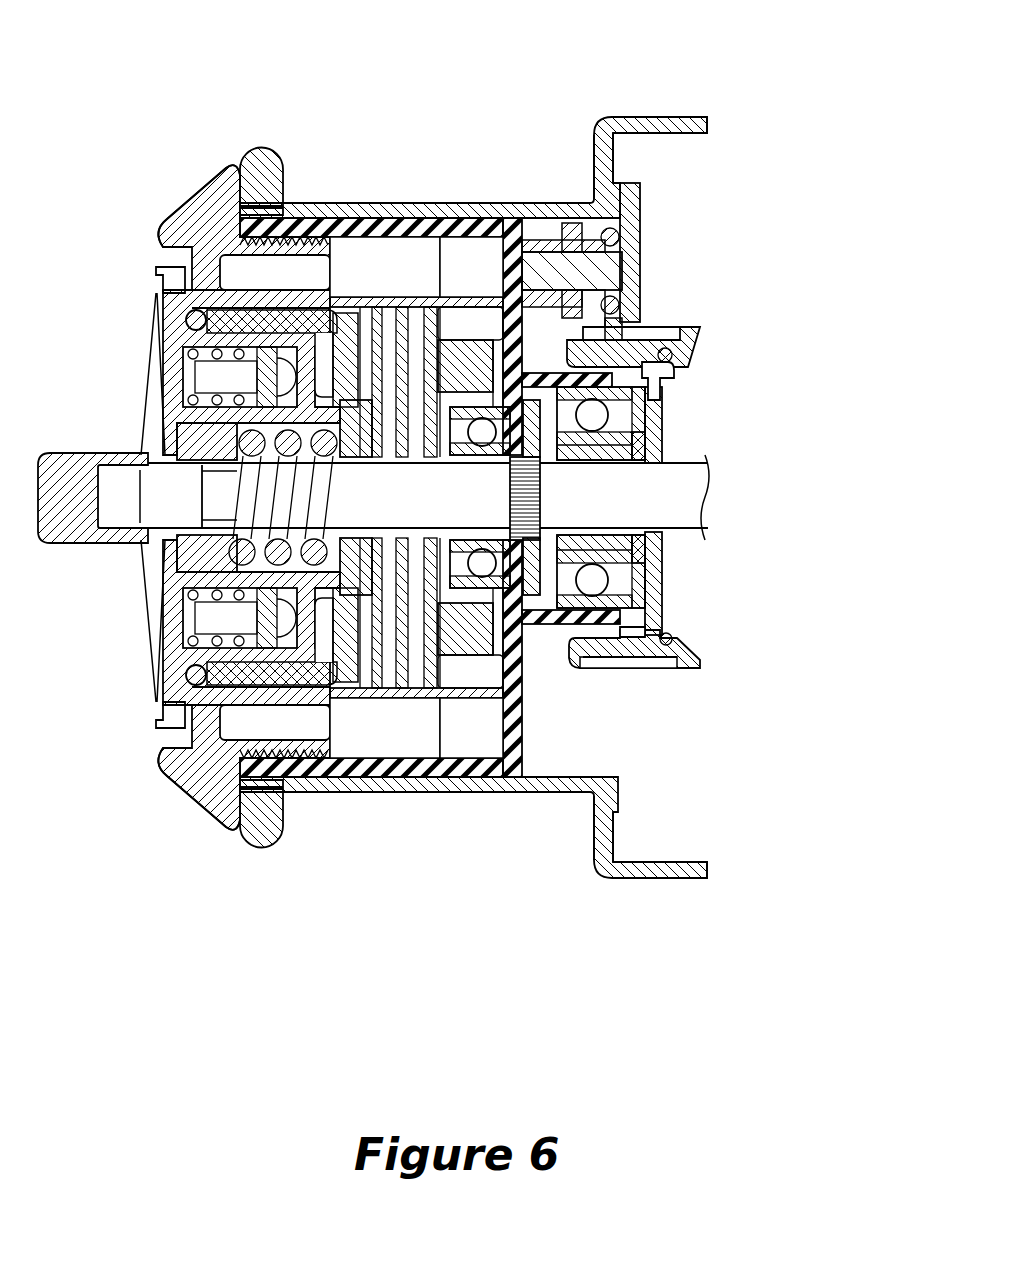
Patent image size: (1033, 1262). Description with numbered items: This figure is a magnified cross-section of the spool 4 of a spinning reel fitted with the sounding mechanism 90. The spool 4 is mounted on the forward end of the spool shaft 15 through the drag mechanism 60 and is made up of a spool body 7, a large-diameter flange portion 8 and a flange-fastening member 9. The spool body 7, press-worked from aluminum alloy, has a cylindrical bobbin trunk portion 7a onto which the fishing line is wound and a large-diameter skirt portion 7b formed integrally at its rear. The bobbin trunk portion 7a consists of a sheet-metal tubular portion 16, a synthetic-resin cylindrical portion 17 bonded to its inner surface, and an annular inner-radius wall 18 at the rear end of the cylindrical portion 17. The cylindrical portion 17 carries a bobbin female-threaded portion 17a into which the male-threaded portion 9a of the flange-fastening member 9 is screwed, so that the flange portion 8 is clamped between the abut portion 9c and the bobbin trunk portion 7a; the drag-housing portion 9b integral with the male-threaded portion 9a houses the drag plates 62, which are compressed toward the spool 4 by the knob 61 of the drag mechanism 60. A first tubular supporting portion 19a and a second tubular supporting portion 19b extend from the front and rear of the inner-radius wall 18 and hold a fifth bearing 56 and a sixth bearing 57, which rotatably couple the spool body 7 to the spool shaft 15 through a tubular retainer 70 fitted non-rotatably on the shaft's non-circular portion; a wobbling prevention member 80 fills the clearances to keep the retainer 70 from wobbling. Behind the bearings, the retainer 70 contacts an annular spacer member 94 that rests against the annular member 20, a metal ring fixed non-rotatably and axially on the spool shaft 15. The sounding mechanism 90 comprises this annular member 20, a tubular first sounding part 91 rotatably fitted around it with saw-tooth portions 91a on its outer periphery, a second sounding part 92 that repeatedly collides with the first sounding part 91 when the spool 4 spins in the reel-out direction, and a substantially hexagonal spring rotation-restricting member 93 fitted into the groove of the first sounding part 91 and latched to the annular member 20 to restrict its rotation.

The spool 4 is at (405, 136).
The spool body 7 is at (443, 200).
The bobbin trunk portion 7a is at (531, 200).
The skirt portion 7b is at (681, 119).
The flange portion 8 is at (262, 150).
The flange-fastening member 9 is at (194, 188).
The male-threaded portion 9a is at (268, 248).
The drag-housing portion 9b is at (300, 306).
The abut portion 9c is at (177, 220).
The spool shaft 15 is at (598, 510).
The tubular portion 16 is at (337, 203).
The cylindrical portion 17 is at (513, 300).
The bobbin female-threaded portion 17a is at (428, 298).
The inner-radius wall 18 is at (512, 265).
The first tubular supporting portion 19a is at (482, 572).
The second tubular supporting portion 19b is at (612, 620).
The annular member 20 is at (668, 412).
The fifth bearing 56 is at (493, 590).
The sixth bearing 57 is at (598, 580).
The drag mechanism 60 is at (314, 690).
The knob 61 is at (165, 678).
The drag plates 62 is at (392, 700).
The retainer 70 is at (538, 598).
The wobbling prevention member 80 is at (440, 600).
The sounding mechanism 90 is at (762, 277).
The first sounding part 91 is at (714, 328).
The saw-tooth portions 91a is at (648, 330).
The second sounding part 92 is at (648, 263).
The rotation-restricting member 93 is at (674, 364).
The annular spacer member 94 is at (658, 450).